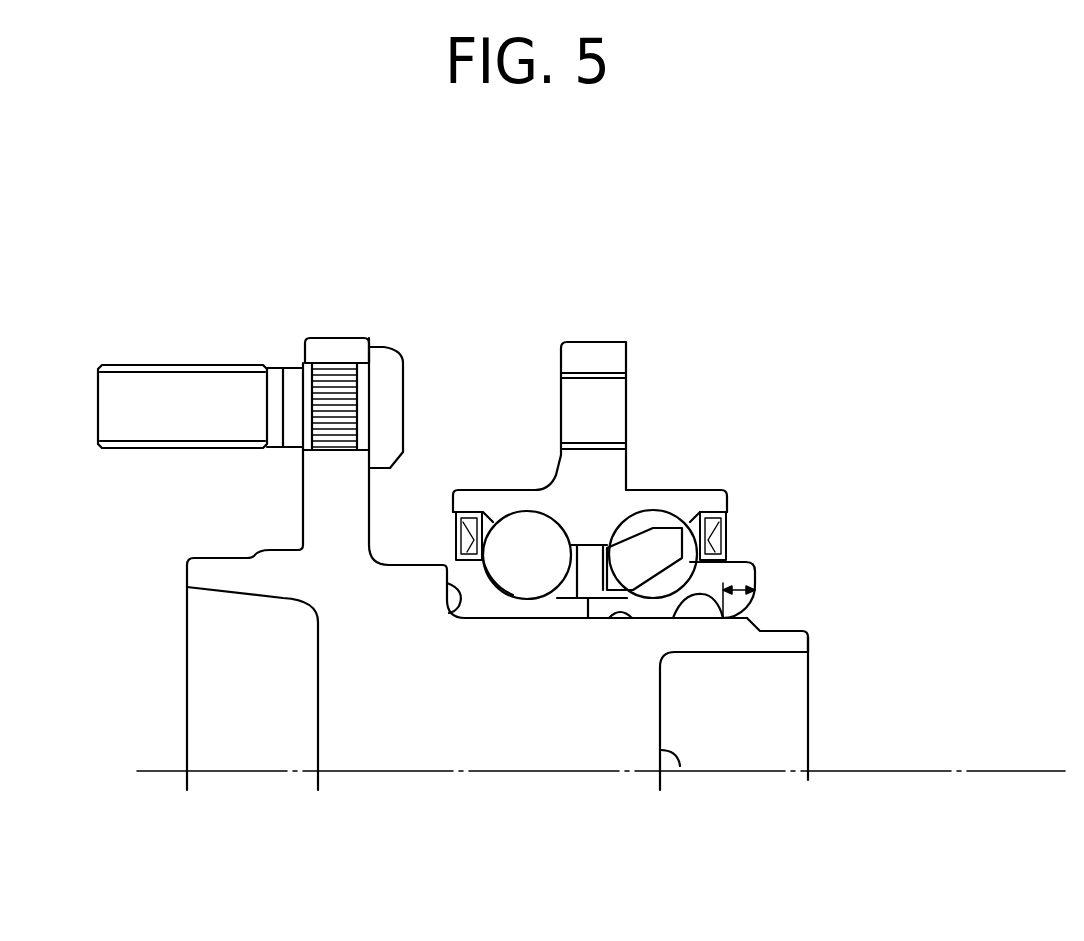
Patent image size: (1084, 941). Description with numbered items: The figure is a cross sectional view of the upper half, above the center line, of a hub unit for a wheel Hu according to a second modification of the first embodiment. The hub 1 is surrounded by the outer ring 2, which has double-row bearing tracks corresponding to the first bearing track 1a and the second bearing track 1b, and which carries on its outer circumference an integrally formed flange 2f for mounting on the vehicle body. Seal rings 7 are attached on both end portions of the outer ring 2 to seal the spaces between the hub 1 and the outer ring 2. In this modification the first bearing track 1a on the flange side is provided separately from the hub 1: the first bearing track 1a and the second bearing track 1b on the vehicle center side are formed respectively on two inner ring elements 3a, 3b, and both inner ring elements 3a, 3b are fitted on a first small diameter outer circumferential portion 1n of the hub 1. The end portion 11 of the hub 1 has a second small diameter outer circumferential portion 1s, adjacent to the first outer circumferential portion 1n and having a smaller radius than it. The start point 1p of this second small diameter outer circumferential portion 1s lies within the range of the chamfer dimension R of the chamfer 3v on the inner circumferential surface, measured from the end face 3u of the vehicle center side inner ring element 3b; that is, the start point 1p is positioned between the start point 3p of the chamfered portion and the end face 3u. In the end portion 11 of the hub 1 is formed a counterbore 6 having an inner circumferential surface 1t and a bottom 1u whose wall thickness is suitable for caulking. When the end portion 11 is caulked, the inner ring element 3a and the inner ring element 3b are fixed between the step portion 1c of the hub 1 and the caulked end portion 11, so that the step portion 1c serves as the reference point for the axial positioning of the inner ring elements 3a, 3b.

The hub 1 is at (357, 640).
The first bearing track 1a is at (495, 585).
The second bearing track 1b is at (672, 567).
The step portion 1c is at (478, 603).
The first small diameter outer circumferential portion 1n is at (607, 612).
The start point of the second small diameter outer circumferential portion 1p is at (747, 620).
The second small diameter outer circumferential portion 1s is at (792, 625).
The inner circumferential surface of the counterbore 1t is at (737, 657).
The bottom of the counterbore 1u is at (680, 766).
The outer ring 2 is at (612, 478).
The flange 2f is at (594, 352).
The inner ring element 3a is at (473, 620).
The inner ring element 3b is at (700, 605).
The start point of the chamfered portion 3p is at (676, 612).
The end face 3u is at (753, 568).
The chamfer 3v is at (750, 607).
The counterbore 6 is at (790, 750).
The seal ring 7 is at (462, 527).
The end portion 11 is at (809, 727).
The chamfer dimension R is at (742, 580).
The hub unit for a wheel Hu is at (171, 714).